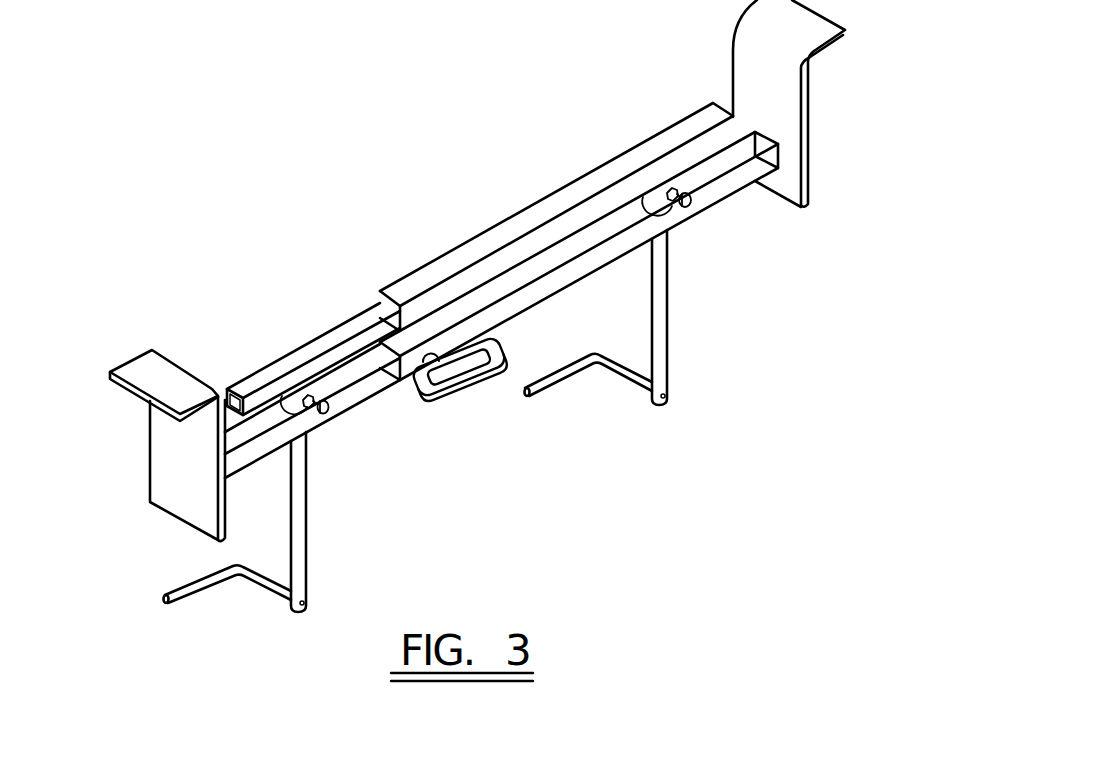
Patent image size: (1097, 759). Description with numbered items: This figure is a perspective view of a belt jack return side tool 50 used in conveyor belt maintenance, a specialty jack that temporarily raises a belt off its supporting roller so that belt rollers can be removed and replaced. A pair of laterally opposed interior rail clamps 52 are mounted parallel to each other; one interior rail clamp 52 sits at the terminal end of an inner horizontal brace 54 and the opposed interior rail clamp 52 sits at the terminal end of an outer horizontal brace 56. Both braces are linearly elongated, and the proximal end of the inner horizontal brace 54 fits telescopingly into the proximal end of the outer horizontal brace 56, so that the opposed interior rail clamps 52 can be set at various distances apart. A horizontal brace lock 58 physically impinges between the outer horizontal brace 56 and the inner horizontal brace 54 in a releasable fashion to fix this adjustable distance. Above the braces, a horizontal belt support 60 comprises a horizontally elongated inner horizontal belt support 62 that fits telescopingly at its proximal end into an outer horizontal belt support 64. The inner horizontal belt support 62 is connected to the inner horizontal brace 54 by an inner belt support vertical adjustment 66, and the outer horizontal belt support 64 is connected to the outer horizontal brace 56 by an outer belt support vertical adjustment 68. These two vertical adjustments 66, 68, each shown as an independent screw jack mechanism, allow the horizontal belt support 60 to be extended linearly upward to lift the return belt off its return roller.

The belt jack return side tool 50 is at (748, 536).
The interior rail clamp 52 is at (152, 372).
The inner horizontal brace 54 is at (362, 382).
The outer horizontal brace 56 is at (712, 192).
The horizontal brace lock 58 is at (467, 397).
The horizontal belt support 60 is at (370, 172).
The inner horizontal belt support 62 is at (258, 380).
The outer horizontal belt support 64 is at (607, 177).
The inner belt support vertical adjustment 66 is at (290, 568).
The outer belt support vertical adjustment 68 is at (668, 358).